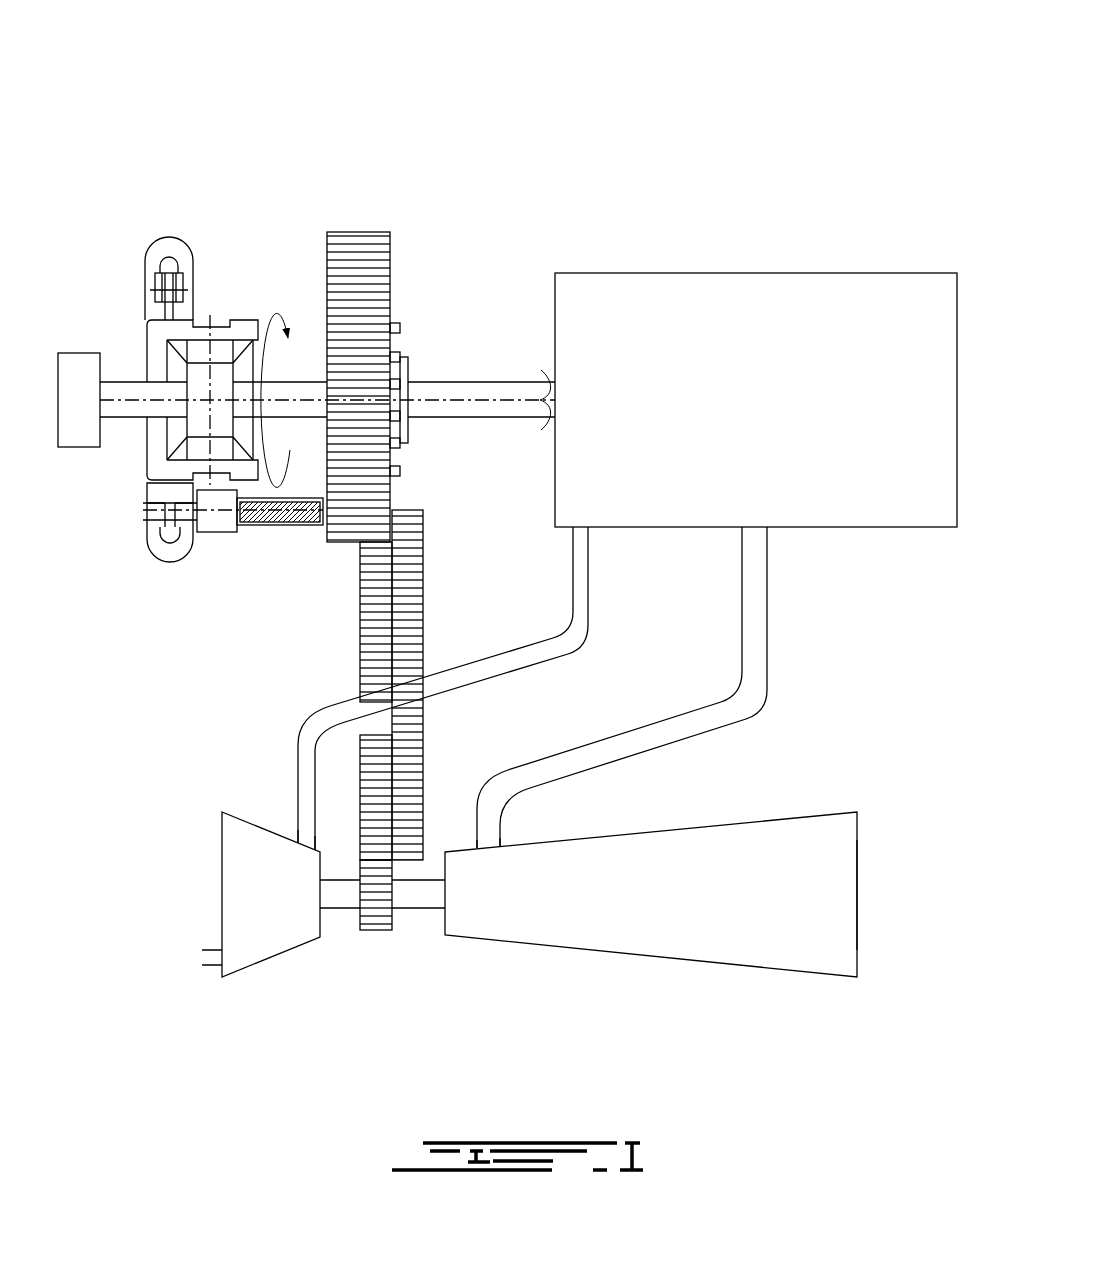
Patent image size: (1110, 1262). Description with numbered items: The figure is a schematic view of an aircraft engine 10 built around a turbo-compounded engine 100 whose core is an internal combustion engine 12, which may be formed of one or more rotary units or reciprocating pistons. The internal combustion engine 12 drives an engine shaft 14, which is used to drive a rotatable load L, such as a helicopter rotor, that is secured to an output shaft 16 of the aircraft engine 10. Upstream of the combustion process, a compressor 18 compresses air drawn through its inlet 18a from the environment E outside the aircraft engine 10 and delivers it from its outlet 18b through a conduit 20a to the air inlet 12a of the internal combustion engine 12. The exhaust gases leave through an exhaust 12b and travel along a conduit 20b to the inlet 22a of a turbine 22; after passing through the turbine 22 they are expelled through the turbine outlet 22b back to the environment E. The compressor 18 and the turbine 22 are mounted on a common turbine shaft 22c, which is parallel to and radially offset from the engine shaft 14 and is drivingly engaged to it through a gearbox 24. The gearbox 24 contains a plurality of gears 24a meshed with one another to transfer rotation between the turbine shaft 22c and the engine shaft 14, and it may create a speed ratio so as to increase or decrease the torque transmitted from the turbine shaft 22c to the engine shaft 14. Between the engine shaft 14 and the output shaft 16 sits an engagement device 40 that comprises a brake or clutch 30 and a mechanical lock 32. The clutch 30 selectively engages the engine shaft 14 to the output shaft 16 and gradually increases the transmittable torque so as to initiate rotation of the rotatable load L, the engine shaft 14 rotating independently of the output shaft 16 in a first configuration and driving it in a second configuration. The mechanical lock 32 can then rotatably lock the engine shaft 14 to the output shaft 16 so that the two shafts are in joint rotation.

The turbo-compounded engine 100 is at (907, 200).
The aircraft engine 10 is at (235, 635).
The internal combustion engine 12 is at (772, 398).
The air inlet 12a is at (585, 510).
The exhaust 12b is at (760, 510).
The engine shaft 14 is at (307, 378).
The output shaft 16 is at (122, 420).
The compressor 18 is at (258, 965).
The compressor inlet 18a is at (193, 957).
The compressor outlet 18b is at (290, 820).
The conduit 20a is at (515, 672).
The conduit 20b is at (768, 629).
The turbine 22 is at (627, 910).
The turbine inlet 22a is at (513, 832).
The turbine outlet 22b is at (855, 905).
The turbine shaft 22c is at (425, 910).
The gearbox 24 is at (427, 275).
The gears 24a is at (423, 572).
The clutch 30 is at (163, 580).
The mechanical lock 32 is at (278, 540).
The engagement device 40 is at (250, 318).
The rotatable load L is at (78, 447).
The environment E is at (116, 1091).